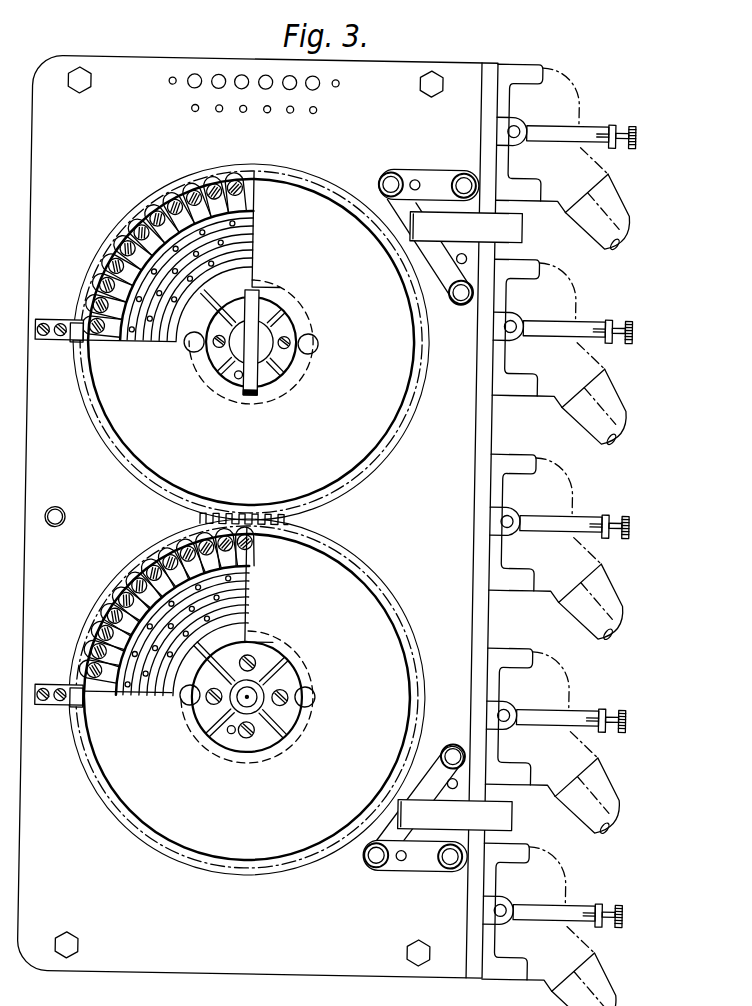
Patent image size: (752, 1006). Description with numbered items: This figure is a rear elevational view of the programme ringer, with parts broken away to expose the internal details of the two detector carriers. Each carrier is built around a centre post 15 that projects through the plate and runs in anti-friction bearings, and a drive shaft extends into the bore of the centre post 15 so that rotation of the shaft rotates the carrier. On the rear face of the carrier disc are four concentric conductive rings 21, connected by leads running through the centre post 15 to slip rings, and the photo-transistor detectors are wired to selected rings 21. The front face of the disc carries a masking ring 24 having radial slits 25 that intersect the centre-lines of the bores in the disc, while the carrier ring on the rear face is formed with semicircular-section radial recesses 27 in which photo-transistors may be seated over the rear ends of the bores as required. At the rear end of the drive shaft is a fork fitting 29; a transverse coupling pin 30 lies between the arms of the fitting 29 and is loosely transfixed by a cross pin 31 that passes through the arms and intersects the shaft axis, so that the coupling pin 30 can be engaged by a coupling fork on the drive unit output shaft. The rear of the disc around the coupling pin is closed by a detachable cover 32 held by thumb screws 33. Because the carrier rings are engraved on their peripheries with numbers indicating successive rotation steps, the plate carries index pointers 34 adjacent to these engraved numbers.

The centre post 15 is at (265, 705).
The concentric conductive rings 21 is at (155, 252).
The masking ring 24 is at (164, 208).
The radial slits 25 is at (184, 196).
The radial recesses 27 is at (202, 204).
The fork fitting 29 is at (277, 324).
The coupling pin 30 is at (260, 372).
The cross pin 31 is at (235, 372).
The detachable cover 32 is at (389, 413).
The thumb screws 33 is at (188, 353).
The index pointers 34 is at (70, 326).